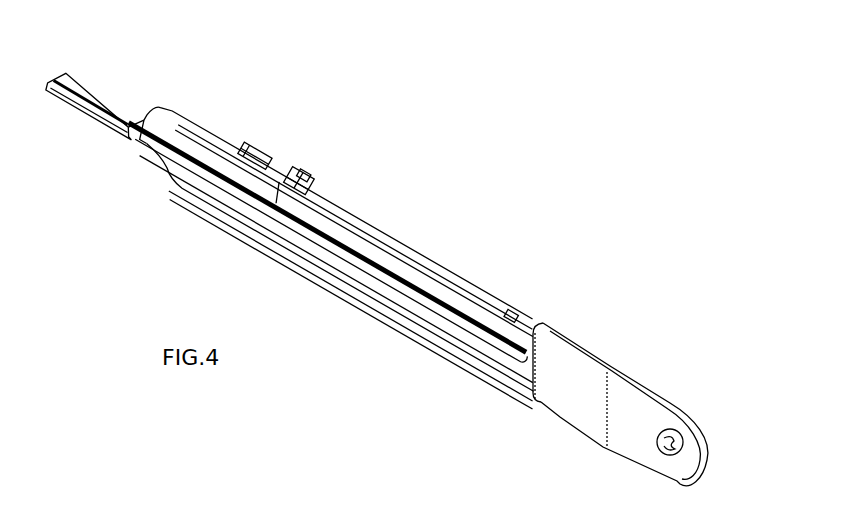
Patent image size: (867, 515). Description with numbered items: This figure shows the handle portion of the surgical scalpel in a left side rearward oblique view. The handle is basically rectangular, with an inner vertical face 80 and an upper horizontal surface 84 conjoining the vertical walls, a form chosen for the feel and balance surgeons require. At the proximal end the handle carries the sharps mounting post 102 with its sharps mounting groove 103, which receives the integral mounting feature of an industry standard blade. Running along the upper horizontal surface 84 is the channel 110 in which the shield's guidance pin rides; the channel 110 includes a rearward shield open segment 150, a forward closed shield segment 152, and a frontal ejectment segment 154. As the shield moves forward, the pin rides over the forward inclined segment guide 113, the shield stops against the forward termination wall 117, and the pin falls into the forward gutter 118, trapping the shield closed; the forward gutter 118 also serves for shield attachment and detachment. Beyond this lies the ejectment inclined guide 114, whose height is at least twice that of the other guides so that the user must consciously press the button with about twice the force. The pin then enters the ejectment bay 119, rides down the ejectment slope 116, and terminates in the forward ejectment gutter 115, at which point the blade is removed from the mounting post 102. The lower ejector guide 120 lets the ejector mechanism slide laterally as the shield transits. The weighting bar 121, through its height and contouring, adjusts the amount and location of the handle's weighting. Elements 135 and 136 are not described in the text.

The sharps mounting post 102 is at (110, 96).
The sharps mounting groove 103 is at (119, 112).
The channel 110 is at (386, 230).
The forward inclined segment guide 113 is at (300, 180).
The ejectment inclined guide 114 is at (197, 204).
The forward ejectment gutter 115 is at (246, 157).
The ejectment slope 116 is at (269, 156).
The forward termination wall 117 is at (309, 186).
The forward gutter 118 is at (285, 185).
The ejectment bay 119 is at (308, 173).
The lower ejector guide 120 is at (513, 360).
The weighting bar 121 is at (437, 308).
The upper rail 135 is at (418, 257).
The rail edge 136 is at (471, 287).
The rearward shield open segment 150 is at (533, 322).
The forward closed shield segment 152 is at (286, 188).
The frontal ejectment segment 154 is at (262, 167).
The inner vertical face 80 is at (513, 316).
The upper horizontal surface 84 is at (543, 324).